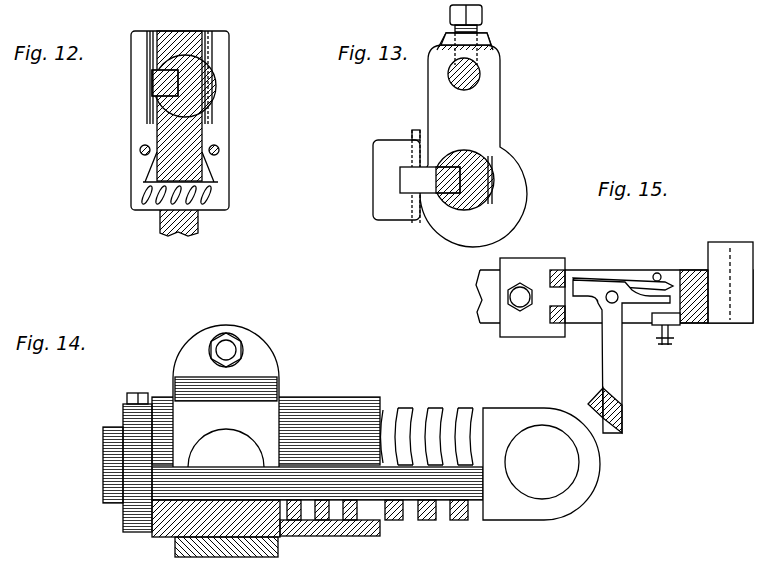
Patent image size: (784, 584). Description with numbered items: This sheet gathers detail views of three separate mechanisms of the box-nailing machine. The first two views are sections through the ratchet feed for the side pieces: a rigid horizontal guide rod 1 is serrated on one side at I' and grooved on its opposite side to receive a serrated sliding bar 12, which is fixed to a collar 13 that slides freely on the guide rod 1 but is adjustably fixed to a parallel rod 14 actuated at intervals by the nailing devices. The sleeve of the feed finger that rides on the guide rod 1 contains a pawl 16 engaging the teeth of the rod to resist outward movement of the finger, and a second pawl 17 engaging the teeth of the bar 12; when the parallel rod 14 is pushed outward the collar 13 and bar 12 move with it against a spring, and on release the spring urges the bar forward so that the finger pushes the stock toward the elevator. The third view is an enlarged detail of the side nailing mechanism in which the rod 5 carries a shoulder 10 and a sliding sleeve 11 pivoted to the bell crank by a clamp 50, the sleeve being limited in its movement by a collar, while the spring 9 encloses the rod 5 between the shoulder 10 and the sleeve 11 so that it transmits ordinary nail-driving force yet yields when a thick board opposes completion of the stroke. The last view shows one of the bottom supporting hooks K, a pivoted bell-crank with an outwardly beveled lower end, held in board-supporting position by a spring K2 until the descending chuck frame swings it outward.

In FIG. 12, the guide rod 1 is at (208, 118).
In FIG. 13, the guide rod 1 is at (490, 197).
In FIG. 13, the serrations I' is at (524, 174).
In FIG. 12, the serrated sliding bar 12 is at (152, 84).
In FIG. 13, the serrated sliding bar 12 is at (456, 165).
In FIG. 14, the serrated sliding bar 12 is at (125, 512).
In FIG. 13, the collar 13 is at (512, 142).
In FIG. 13, the parallel rod 14 is at (481, 72).
In FIG. 12, the pawl 16 is at (131, 126).
In FIG. 12, the pawl 17 is at (222, 120).
In FIG. 14, the rod 5 is at (474, 467).
In FIG. 14, the spring 9 is at (440, 410).
In FIG. 14, the shoulder 10 is at (484, 516).
In FIG. 14, the sliding sleeve 11 is at (318, 397).
In FIG. 14, the clamp 50 is at (282, 380).
In FIG. 15, the swinging hooks K is at (578, 278).
In FIG. 15, the springs K2 is at (633, 276).